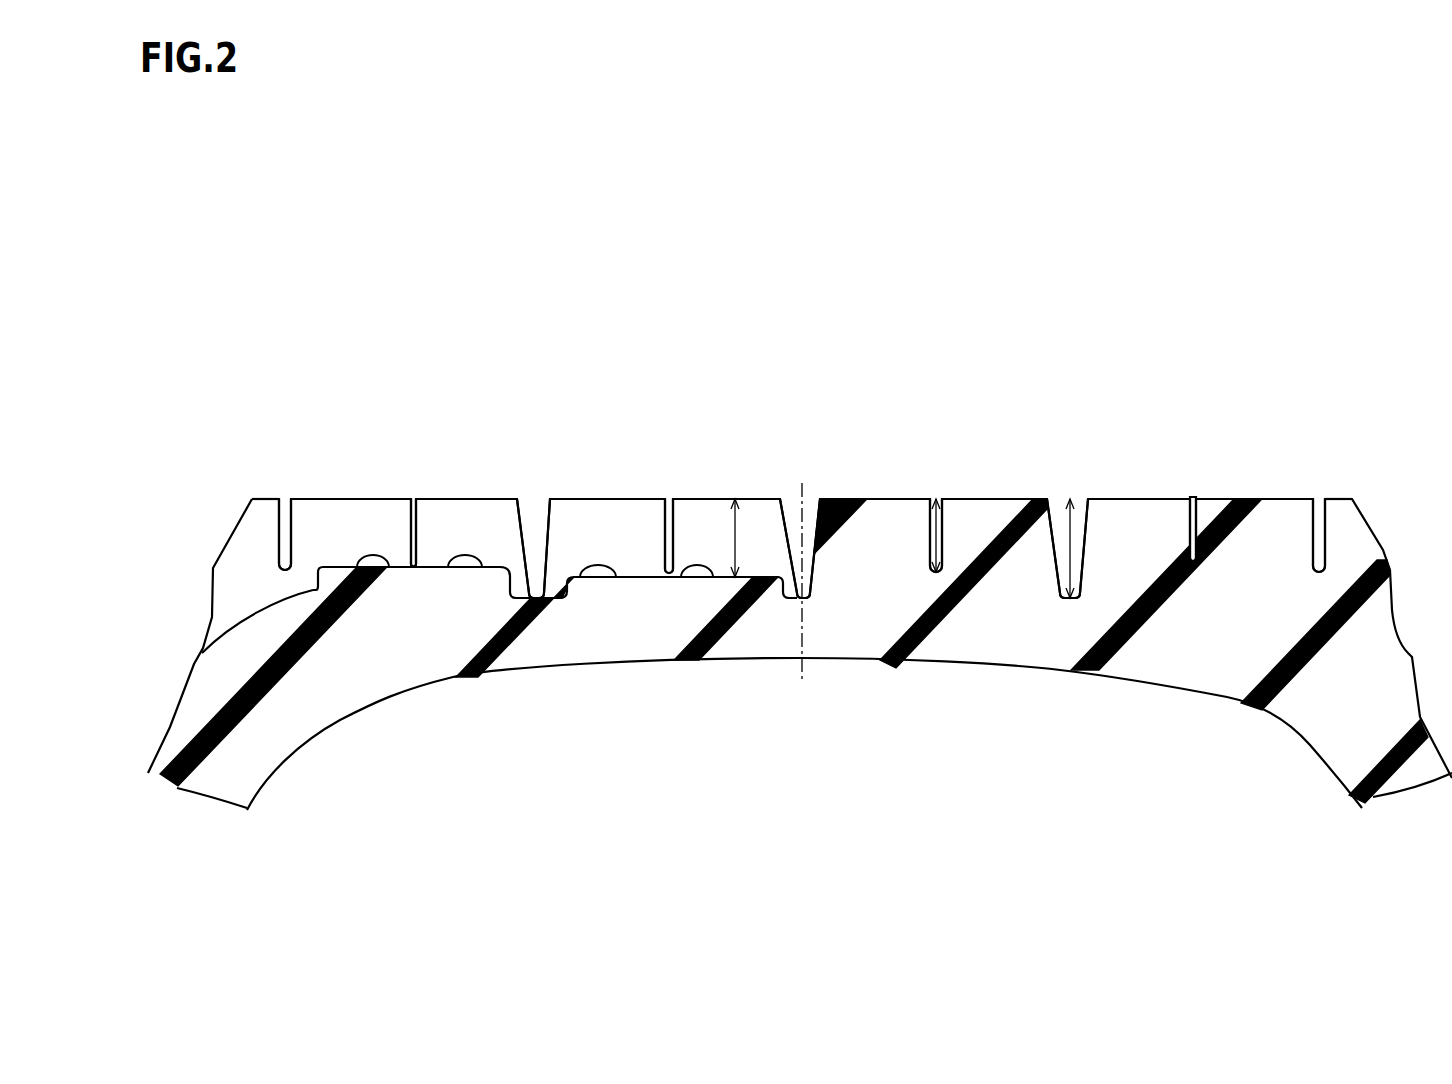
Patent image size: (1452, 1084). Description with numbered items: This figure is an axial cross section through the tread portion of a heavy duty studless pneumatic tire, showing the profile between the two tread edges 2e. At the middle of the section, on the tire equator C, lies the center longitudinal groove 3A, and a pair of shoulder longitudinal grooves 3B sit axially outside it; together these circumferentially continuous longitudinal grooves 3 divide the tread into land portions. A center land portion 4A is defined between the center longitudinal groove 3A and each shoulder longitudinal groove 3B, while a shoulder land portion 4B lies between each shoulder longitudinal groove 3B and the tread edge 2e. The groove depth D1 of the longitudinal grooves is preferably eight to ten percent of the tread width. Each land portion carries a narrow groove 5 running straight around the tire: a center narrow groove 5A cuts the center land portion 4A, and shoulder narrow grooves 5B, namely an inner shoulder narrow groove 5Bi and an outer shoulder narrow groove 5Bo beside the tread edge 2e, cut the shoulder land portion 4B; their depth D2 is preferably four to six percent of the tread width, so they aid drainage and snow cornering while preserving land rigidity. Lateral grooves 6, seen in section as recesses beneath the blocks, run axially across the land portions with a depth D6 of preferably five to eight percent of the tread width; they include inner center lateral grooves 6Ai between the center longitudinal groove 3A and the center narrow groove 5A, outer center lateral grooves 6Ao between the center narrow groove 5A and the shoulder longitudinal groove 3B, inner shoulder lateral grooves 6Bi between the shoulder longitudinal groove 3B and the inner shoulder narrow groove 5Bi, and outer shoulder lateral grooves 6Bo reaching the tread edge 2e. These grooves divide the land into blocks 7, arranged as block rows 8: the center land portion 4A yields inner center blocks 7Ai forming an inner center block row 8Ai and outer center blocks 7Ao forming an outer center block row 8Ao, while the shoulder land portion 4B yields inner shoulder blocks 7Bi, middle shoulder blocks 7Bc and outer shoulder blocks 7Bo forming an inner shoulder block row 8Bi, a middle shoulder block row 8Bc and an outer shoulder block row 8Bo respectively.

The tread edge 2e is at (252, 499).
The longitudinal groove 3 is at (809, 422).
The center longitudinal groove 3A is at (793, 535).
The shoulder longitudinal groove 3B is at (536, 535).
The center land portion 4A is at (778, 320).
The shoulder land portion 4B is at (505, 323).
The narrow groove 5 is at (800, 478).
The center narrow groove 5A is at (669, 510).
The shoulder narrow groove 5B is at (800, 478).
The outer shoulder narrow groove 5Bo is at (285, 510).
The inner shoulder narrow groove 5Bi is at (414, 510).
The lateral groove 6 is at (794, 678).
The outer center lateral groove 6Ao is at (603, 575).
The inner center lateral groove 6Ai is at (762, 655).
The outer shoulder lateral groove 6Bo is at (388, 570).
The inner shoulder lateral groove 6Bi is at (480, 570).
The block 7 is at (477, 417).
The outer center block 7Ao is at (620, 497).
The inner center block 7Ai is at (725, 497).
The outer shoulder block 7Bo is at (265, 497).
The middle shoulder block 7Bc is at (345, 497).
The inner shoulder block 7Bi is at (472, 497).
The block row 8 is at (1123, 417).
The inner center block row 8Ai is at (887, 497).
The outer center block row 8Ao is at (993, 497).
The inner shoulder block row 8Bi is at (1153, 497).
The middle shoulder block row 8Bc is at (1263, 497).
The outer shoulder block row 8Bo is at (1340, 497).
The tire equator C is at (802, 598).
The groove depth of longitudinal groove D1 is at (1071, 540).
The groove depth of narrow groove D2 is at (940, 530).
The groove depth of lateral groove D6 is at (735, 540).